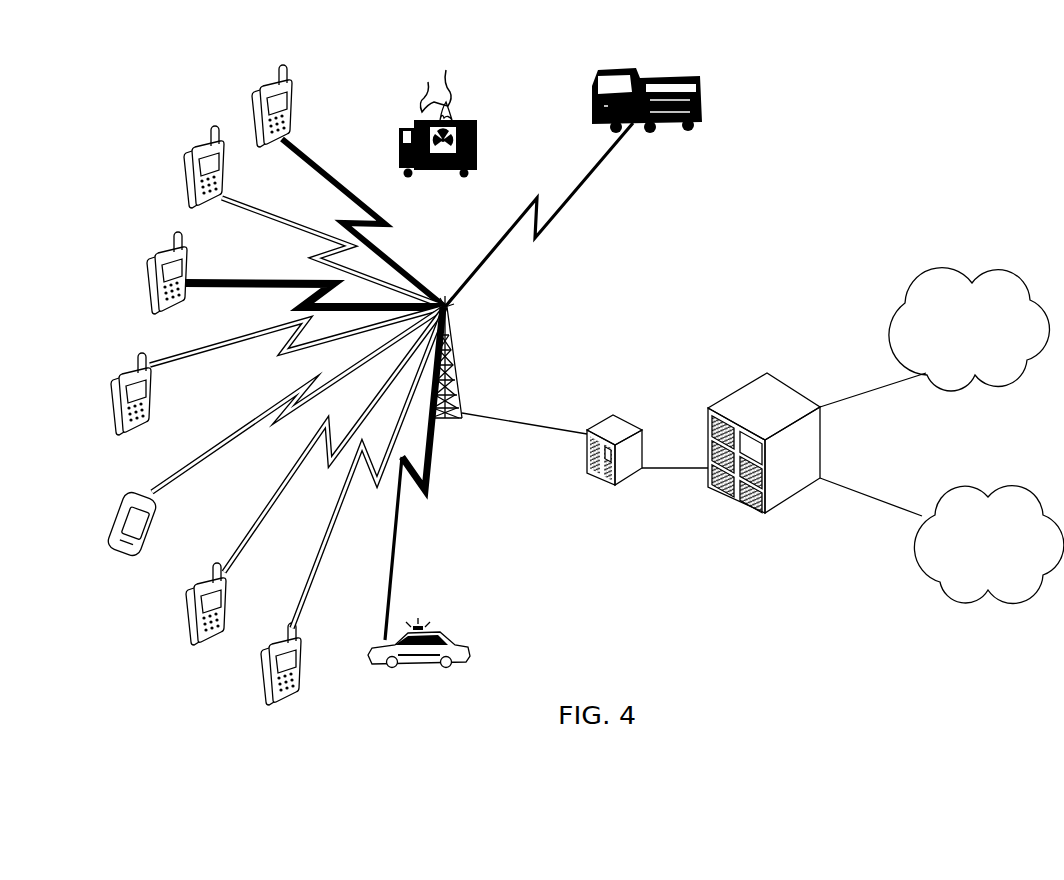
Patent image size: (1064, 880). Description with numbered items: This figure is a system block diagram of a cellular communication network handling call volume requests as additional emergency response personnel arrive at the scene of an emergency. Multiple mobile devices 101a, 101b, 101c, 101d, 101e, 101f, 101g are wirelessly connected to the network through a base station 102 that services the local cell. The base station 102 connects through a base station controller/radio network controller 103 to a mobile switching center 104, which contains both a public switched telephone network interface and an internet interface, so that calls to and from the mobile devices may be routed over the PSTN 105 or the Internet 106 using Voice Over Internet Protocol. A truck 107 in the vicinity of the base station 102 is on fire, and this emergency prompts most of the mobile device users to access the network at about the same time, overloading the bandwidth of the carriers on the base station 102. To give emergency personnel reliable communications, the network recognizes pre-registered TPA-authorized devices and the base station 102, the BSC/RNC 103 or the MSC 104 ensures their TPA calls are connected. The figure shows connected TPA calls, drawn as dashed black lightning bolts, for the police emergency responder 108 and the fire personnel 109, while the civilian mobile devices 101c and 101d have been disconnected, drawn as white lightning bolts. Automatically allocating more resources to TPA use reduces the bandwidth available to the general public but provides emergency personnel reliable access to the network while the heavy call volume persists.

The mobile device 101a is at (275, 637).
The mobile device 101b is at (193, 582).
The mobile device 101c is at (123, 493).
The mobile device 101d is at (114, 375).
The mobile device 101e is at (149, 255).
The mobile device 101f is at (186, 145).
The mobile device 101g is at (261, 82).
The base station 102 is at (460, 333).
The base station controller/radio network controller 103 is at (613, 415).
The mobile switching center 104 is at (767, 373).
The public switched telephone network 105 is at (936, 268).
The Internet 106 is at (1011, 482).
The truck 107 is at (478, 135).
The emergency responder 108 is at (466, 645).
The additional emergency personnel 109 is at (701, 111).